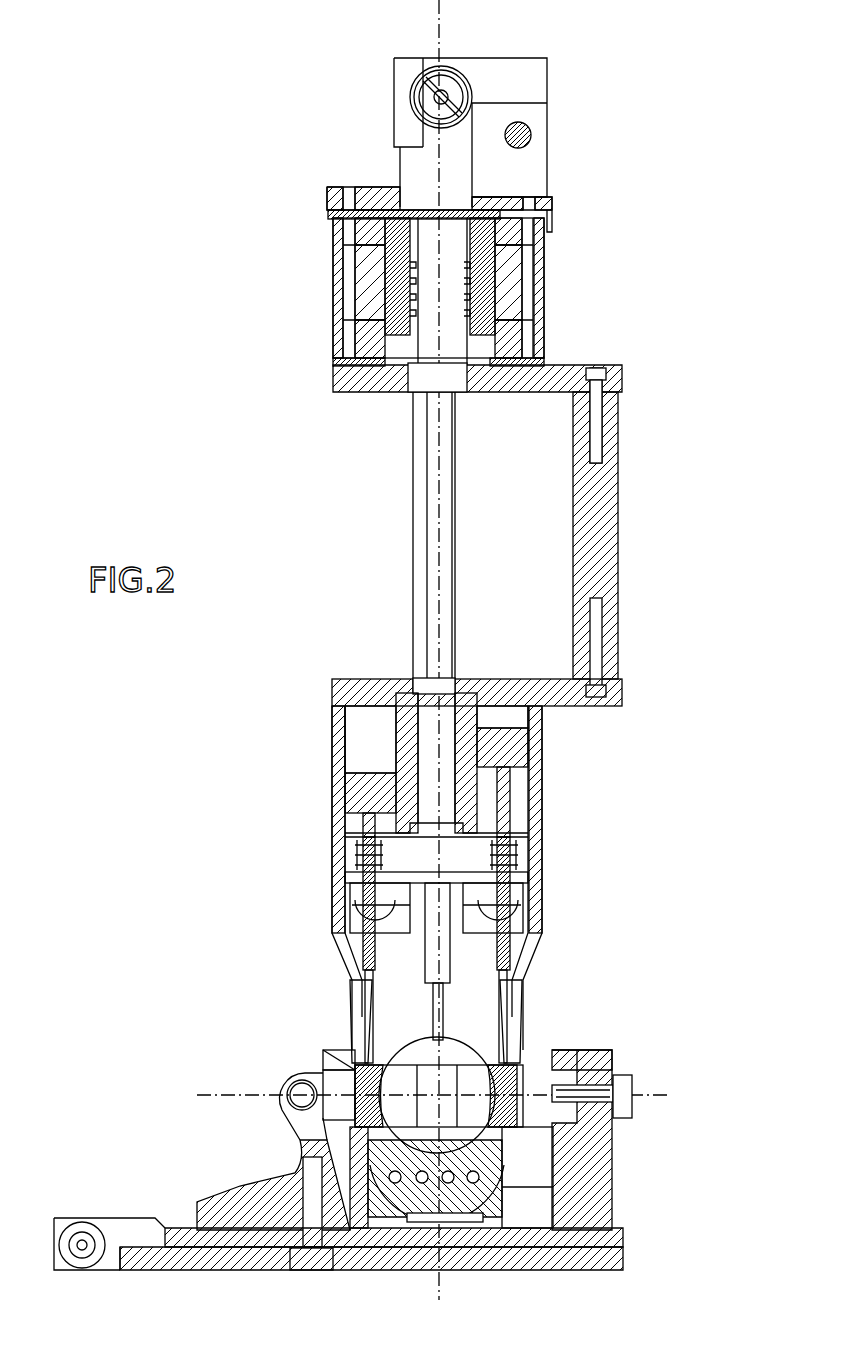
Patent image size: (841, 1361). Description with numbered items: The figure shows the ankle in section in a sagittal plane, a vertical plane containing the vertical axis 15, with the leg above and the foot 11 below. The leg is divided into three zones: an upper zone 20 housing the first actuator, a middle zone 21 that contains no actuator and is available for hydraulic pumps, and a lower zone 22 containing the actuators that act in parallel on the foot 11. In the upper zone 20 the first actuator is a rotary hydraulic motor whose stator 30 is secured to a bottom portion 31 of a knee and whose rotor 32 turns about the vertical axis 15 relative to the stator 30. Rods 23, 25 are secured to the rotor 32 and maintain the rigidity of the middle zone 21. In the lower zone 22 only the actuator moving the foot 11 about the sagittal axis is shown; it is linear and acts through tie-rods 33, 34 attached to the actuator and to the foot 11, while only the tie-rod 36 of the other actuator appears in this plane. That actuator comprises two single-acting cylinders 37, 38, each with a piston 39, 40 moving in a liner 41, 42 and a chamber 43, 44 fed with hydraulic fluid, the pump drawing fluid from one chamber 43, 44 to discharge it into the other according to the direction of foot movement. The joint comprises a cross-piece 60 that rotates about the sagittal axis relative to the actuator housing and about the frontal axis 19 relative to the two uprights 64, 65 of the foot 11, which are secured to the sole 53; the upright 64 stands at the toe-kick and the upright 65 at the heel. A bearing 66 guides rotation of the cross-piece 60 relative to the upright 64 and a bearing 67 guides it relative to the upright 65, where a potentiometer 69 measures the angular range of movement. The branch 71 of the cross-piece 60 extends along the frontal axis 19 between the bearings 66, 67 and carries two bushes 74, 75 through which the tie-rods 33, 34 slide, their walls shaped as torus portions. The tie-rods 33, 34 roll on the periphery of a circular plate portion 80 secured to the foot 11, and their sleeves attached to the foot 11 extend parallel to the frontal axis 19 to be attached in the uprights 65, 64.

The foot 11 is at (379, 1138).
The vertical axis 15 is at (445, 45).
The frontal axis 19 is at (213, 1095).
The upper zone 20 is at (466, 304).
The middle zone 21 is at (540, 534).
The lower zone 22 is at (481, 870).
The rod 23 is at (415, 535).
The rod 25 is at (585, 527).
The stator 30 is at (338, 262).
The bottom portion of a knee 31 is at (365, 193).
The rotor 32 is at (447, 405).
The tie-rod 33 is at (367, 1013).
The tie-rod 34 is at (542, 1014).
The tie-rod 36 is at (440, 962).
The cylinder 37 is at (313, 838).
The cylinder 38 is at (566, 838).
The piston 39 is at (337, 765).
The piston 40 is at (527, 748).
The liner 41 is at (338, 810).
The liner 42 is at (530, 788).
The chamber 43 is at (330, 888).
The chamber 44 is at (608, 720).
The sole 53 is at (615, 1258).
The cross-piece 60 is at (420, 1030).
The upright 64 is at (237, 1197).
The upright 65 is at (629, 1133).
The bearing 66 is at (337, 1078).
The bearing 67 is at (612, 1055).
The potentiometer 69 is at (632, 1100).
The branch 71 is at (527, 1065).
The bush 74 is at (513, 1113).
The bush 75 is at (380, 1065).
The circular plate portion 80 is at (490, 1193).